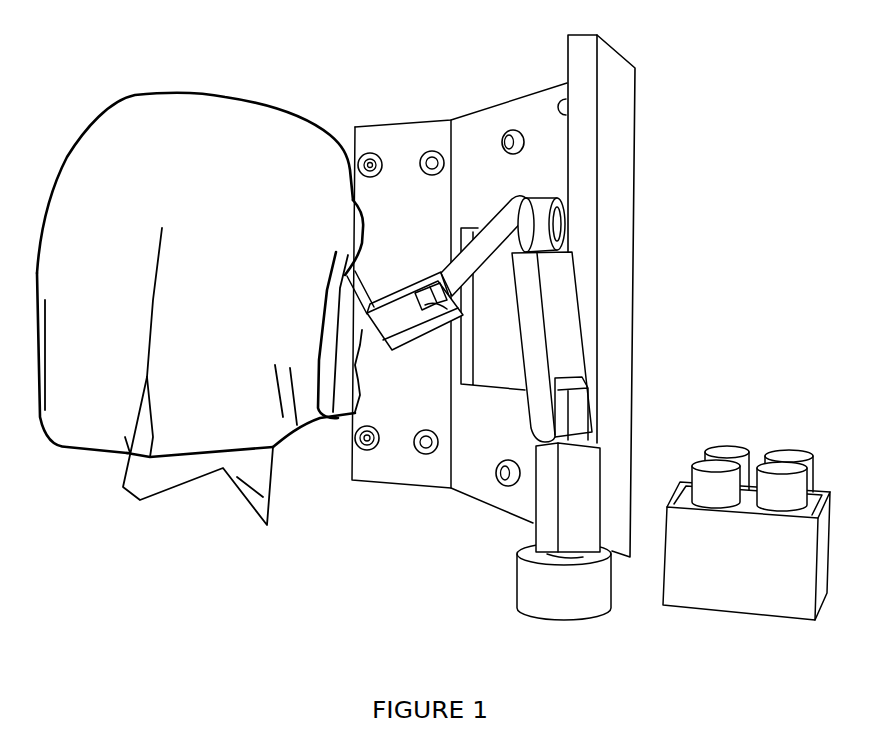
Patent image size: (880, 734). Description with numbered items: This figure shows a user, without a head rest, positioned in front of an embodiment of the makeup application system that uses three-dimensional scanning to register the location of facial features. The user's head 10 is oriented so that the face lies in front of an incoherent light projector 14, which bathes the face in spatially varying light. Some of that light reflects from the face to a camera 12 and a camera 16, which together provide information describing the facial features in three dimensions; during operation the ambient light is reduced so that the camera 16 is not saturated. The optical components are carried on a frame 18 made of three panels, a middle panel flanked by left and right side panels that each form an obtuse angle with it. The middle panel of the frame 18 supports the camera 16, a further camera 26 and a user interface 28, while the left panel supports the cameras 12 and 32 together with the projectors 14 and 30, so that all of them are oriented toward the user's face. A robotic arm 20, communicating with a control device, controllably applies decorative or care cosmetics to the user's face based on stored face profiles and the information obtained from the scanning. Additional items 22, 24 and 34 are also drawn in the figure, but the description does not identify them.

The user's head 10 is at (98, 118).
The camera 12 is at (367, 153).
The incoherent light projector 14 is at (433, 151).
The camera 16 is at (513, 129).
The frame 18 is at (635, 160).
The robotic arm 20 is at (588, 307).
The pegs 22 is at (738, 450).
The block 24 is at (830, 530).
The camera 26 is at (508, 487).
The user interface 28 is at (487, 393).
The projector 30 is at (428, 455).
The camera 32 is at (377, 448).
The end effector 34 is at (366, 318).